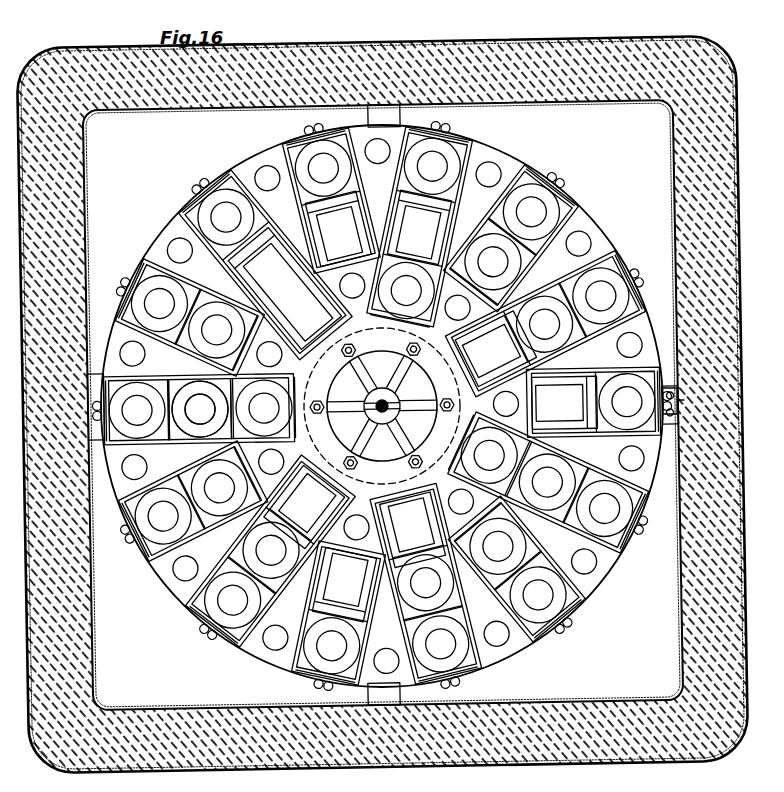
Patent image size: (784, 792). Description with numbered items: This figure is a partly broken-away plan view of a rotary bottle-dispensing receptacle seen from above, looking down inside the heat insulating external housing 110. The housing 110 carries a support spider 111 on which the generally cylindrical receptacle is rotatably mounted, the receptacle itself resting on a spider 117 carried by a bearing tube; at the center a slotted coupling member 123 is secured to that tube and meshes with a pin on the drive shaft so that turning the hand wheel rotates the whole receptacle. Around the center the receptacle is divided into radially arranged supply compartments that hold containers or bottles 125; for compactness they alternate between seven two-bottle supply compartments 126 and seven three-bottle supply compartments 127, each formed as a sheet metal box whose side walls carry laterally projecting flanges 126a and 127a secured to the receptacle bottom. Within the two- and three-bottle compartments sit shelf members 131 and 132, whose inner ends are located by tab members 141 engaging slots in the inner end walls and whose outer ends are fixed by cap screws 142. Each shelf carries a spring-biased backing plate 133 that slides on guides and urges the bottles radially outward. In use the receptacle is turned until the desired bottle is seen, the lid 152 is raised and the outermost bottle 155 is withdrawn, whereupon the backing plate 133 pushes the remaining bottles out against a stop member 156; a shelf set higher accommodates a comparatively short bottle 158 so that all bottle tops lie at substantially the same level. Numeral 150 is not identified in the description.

The heat insulating external housing 110 is at (632, 44).
The support spider 111 is at (382, 108).
The spider 117 is at (360, 378).
The slotted coupling member 123 is at (394, 402).
The containers or bottles 125 is at (330, 650).
The two-bottle supply compartments 126 is at (287, 146).
The laterally projecting flanges 126a is at (586, 212).
The three-bottle supply compartments 127 is at (200, 200).
The laterally projecting flanges 127a is at (600, 250).
The shelf member 131 is at (584, 604).
The shelf member 132 is at (198, 588).
The backing plate 133 is at (297, 387).
The tab members 141 is at (318, 372).
The cap screws 142 is at (128, 283).
The guide post 150 is at (263, 172).
The lid 152 is at (320, 324).
The bottle 155 is at (130, 412).
The stop member 156 is at (150, 456).
The comparatively short bottle 158 is at (684, 412).